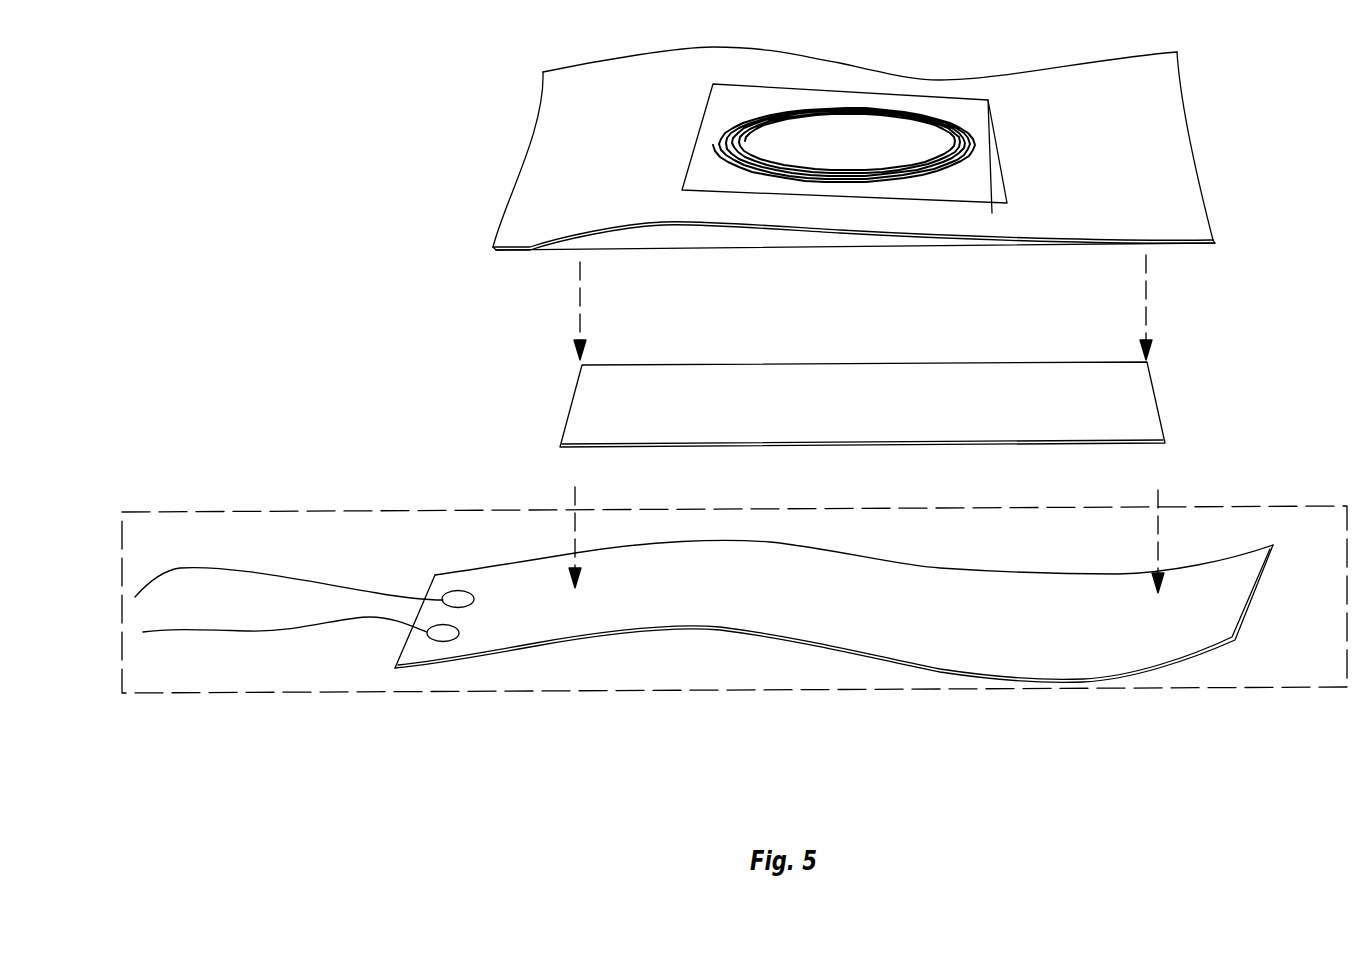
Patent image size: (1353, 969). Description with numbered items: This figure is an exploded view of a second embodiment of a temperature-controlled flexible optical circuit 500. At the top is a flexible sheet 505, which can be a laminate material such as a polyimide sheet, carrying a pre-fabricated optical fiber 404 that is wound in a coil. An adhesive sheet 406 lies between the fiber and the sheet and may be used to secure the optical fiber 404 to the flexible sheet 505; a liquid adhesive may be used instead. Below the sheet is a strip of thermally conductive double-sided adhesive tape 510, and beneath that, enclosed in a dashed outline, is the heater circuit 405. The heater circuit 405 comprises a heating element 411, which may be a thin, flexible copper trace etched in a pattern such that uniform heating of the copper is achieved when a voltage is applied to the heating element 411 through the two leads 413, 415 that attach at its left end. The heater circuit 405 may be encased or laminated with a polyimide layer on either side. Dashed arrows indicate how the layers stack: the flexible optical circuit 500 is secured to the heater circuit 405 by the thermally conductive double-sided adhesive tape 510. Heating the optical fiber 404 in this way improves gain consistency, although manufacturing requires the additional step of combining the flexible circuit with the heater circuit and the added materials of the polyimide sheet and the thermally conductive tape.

The temperature-controlled flexible optical circuit 500 is at (373, 168).
The flexible sheet 505 is at (553, 158).
The adhesive sheet 406 is at (998, 148).
The optical fiber 404 is at (917, 115).
The thermally conductive double-sided adhesive tape 510 is at (1163, 392).
The heater circuit 405 is at (307, 510).
The heating element 411 is at (948, 632).
The lead 413 is at (378, 592).
The lead 415 is at (357, 620).